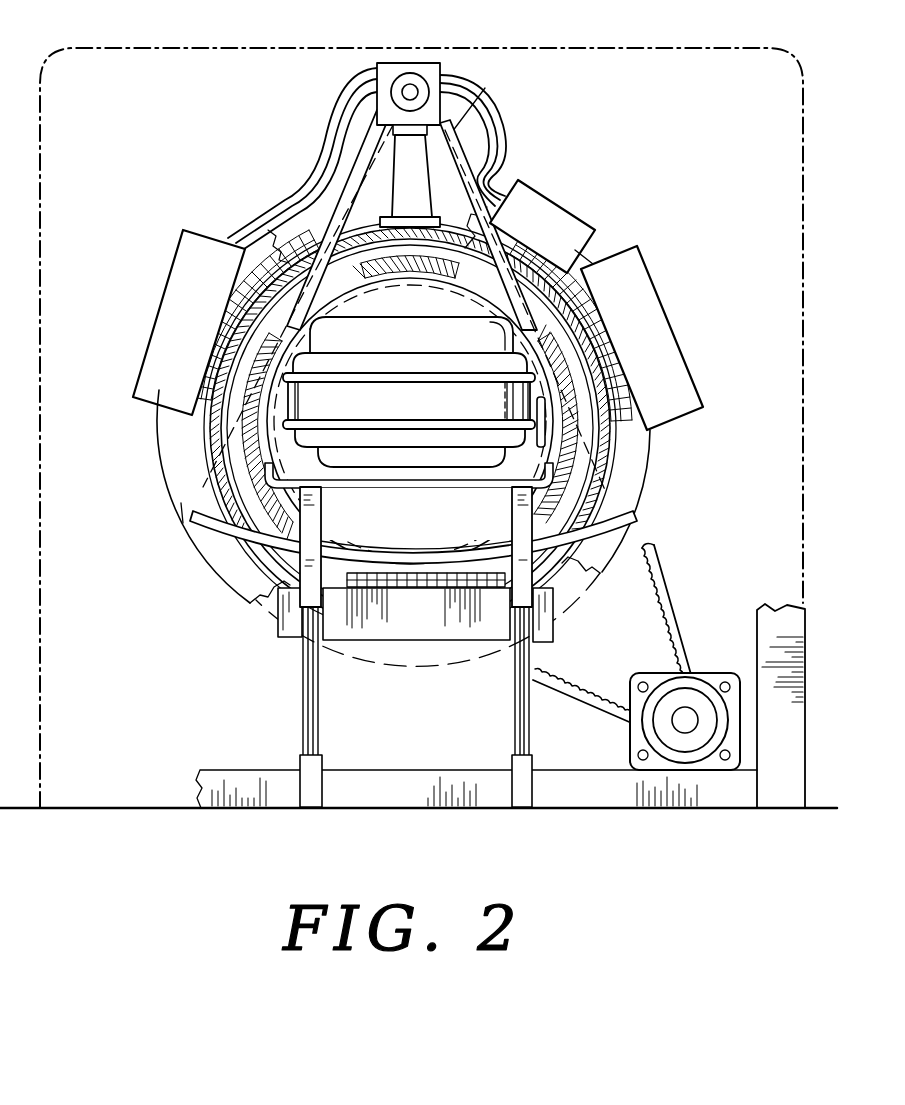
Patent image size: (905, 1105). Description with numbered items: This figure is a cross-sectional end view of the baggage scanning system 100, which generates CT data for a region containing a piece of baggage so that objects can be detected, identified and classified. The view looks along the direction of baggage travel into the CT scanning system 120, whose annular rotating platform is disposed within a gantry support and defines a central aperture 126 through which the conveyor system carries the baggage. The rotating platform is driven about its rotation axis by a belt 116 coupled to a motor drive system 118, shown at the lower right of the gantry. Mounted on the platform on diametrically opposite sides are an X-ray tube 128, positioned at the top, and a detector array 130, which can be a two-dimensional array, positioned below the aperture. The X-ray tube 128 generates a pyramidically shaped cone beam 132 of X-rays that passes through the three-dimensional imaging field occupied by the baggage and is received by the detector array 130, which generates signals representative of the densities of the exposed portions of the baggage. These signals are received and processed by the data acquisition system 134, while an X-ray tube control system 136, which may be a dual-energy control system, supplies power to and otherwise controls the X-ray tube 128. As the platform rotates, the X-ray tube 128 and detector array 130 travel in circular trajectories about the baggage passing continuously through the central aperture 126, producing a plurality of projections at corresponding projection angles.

The baggage scanning system 100 is at (186, 858).
The belt 116 is at (665, 582).
The motor drive system 118 is at (687, 715).
The CT scanning system 120 is at (124, 44).
The central aperture 126 is at (443, 536).
The X-ray tube 128 is at (393, 80).
The detector array 130 is at (220, 515).
The cone beam 132 is at (628, 468).
The data acquisition system 134 is at (371, 635).
The X-ray tube control system 136 is at (180, 283).